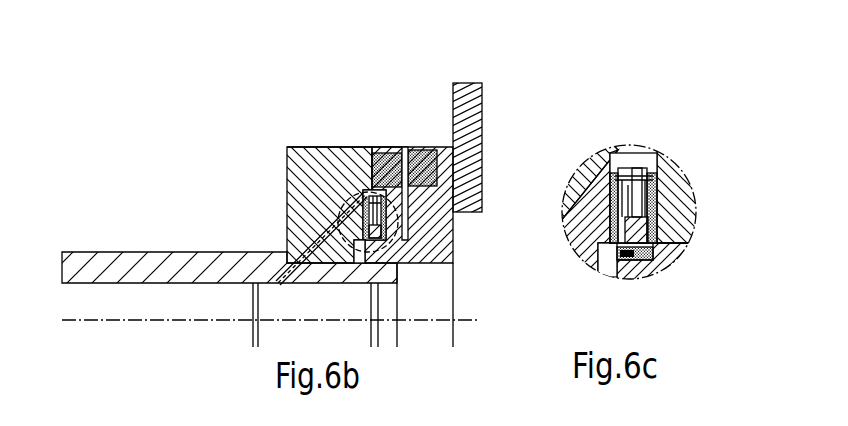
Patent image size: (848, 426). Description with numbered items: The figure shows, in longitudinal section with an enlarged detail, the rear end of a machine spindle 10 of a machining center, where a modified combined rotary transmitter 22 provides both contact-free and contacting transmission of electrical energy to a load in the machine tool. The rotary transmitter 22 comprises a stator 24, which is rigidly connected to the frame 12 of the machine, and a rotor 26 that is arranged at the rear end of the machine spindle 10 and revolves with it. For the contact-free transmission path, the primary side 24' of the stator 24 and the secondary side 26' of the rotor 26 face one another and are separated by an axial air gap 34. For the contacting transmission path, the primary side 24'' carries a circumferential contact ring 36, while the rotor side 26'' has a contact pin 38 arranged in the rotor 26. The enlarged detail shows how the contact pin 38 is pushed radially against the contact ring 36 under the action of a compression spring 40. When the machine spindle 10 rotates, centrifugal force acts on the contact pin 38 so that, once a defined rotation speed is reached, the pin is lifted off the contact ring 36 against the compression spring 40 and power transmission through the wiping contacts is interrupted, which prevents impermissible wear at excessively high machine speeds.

In FIG. 6B, the machine spindle 10 is at (170, 273).
In FIG. 6B, the frame 12 is at (465, 135).
In FIG. 6B, the rotary transmitter 22 is at (360, 141).
In FIG. 6B, the stator 24 is at (451, 224).
In FIG. 6C, the stator 24 is at (657, 299).
In FIG. 6B, the primary side 24' is at (354, 184).
In FIG. 6C, the primary side 24'' is at (588, 281).
In FIG. 6B, the rotor 26 is at (287, 190).
In FIG. 6C, the rotor 26 is at (570, 210).
In FIG. 6B, the secondary side 26' is at (368, 158).
In FIG. 6C, the rotor side 26'' is at (683, 198).
In FIG. 6B, the axial air gap 34 is at (402, 138).
In FIG. 6C, the contact ring 36 is at (675, 262).
In FIG. 6C, the contact pin 38 is at (648, 165).
In FIG. 6C, the compression spring 40 is at (620, 177).